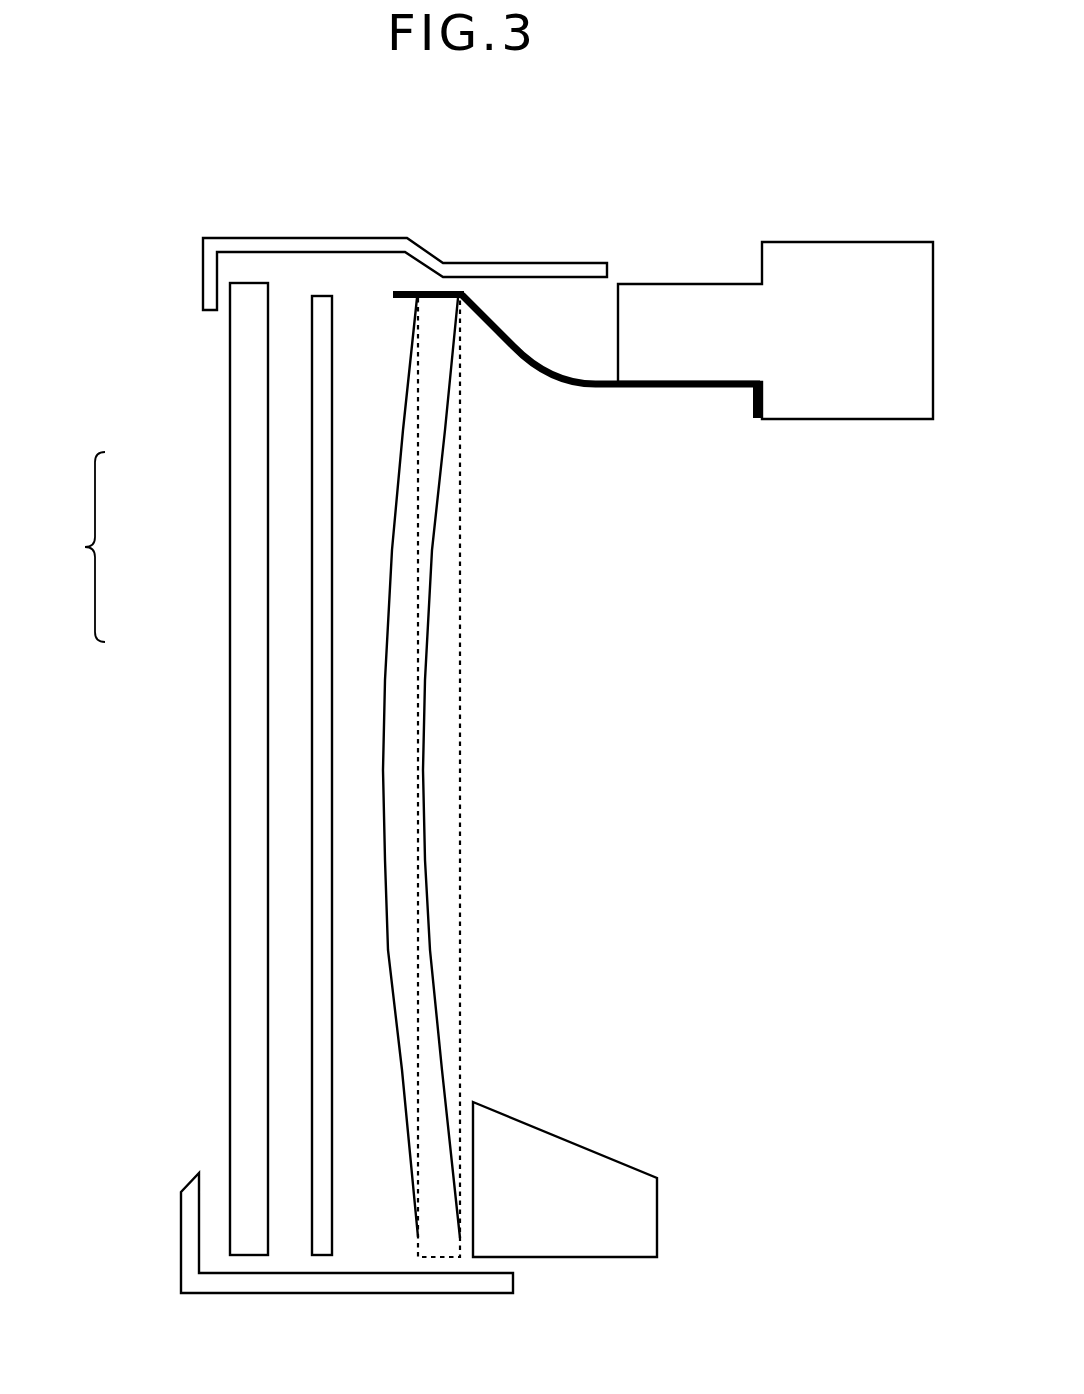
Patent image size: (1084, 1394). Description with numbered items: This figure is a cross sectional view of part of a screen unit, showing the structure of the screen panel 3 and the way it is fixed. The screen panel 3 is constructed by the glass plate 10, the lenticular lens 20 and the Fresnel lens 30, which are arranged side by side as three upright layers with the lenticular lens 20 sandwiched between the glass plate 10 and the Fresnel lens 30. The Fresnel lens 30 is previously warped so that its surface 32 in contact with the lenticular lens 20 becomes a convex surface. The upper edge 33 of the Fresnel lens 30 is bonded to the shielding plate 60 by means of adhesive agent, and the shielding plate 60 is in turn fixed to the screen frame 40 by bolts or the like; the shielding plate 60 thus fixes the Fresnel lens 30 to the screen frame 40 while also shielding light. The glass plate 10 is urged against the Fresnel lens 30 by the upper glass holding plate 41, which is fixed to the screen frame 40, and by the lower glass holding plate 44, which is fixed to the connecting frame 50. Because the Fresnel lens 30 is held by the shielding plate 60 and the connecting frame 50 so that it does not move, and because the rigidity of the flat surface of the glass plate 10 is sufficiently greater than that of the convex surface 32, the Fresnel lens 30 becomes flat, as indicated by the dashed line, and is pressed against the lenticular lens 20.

The screen panel 3 is at (51, 561).
The glass plate 10 is at (250, 495).
The lenticular lens 20 is at (323, 583).
The Fresnel lens 30 is at (402, 683).
The surface 32 is at (385, 752).
The upper edge 33 is at (423, 299).
The screen frame 40 is at (855, 242).
The upper glass holding plate 41 is at (223, 238).
The lower glass holding plate 44 is at (180, 1227).
The connecting frame 50 is at (567, 1258).
The shielding plate 60 is at (508, 344).